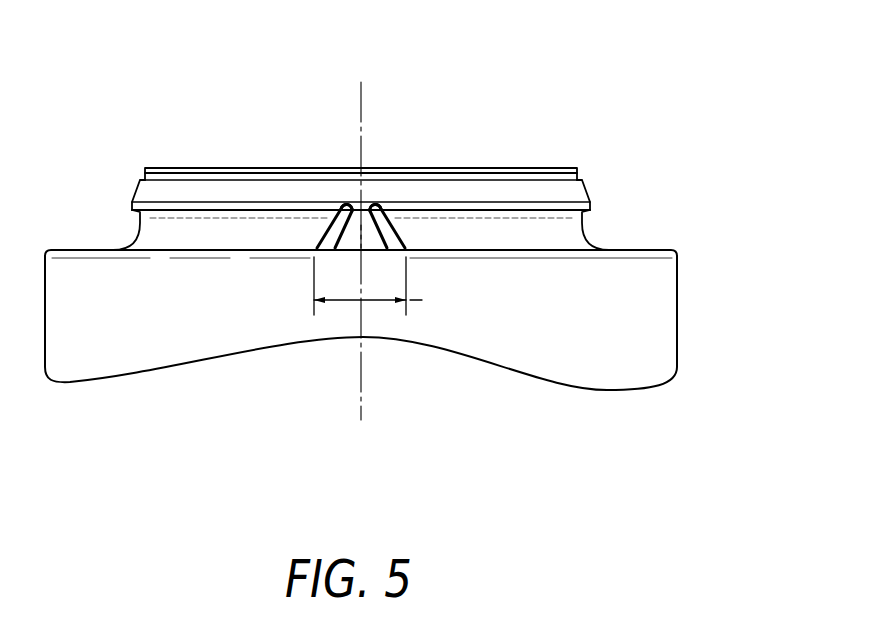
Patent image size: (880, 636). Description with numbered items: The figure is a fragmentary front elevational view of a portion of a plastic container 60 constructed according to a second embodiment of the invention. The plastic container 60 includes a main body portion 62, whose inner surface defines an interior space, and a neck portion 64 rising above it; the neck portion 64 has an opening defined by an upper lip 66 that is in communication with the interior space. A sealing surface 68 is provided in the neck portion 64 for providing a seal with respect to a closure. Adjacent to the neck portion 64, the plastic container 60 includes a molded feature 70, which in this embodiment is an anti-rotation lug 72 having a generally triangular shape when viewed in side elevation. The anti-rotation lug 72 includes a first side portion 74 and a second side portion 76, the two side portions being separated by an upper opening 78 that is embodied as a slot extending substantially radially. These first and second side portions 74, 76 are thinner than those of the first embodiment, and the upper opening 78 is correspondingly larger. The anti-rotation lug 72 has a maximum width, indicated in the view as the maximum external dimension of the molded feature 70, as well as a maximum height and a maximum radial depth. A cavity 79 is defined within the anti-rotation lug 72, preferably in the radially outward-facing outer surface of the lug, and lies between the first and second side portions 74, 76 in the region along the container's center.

The plastic container 60 is at (400, 223).
The main body portion 62 is at (660, 275).
The neck portion 64 is at (583, 228).
The upper lip 66 is at (195, 168).
The sealing surface 68 is at (145, 190).
The molded feature 70 is at (313, 233).
The anti-rotation lug 72 is at (408, 237).
The first side portion 74 is at (342, 207).
The second side portion 76 is at (381, 206).
The upper opening 78 is at (377, 237).
The cavity 79 is at (358, 242).